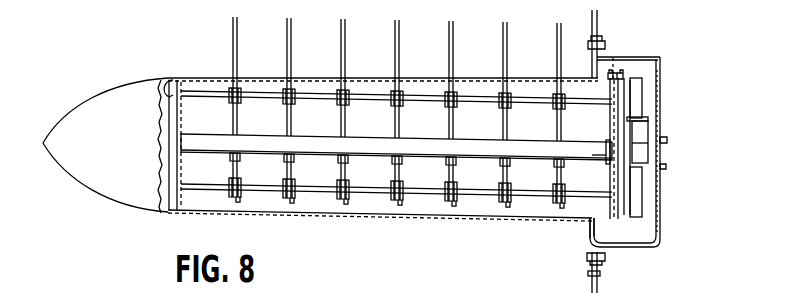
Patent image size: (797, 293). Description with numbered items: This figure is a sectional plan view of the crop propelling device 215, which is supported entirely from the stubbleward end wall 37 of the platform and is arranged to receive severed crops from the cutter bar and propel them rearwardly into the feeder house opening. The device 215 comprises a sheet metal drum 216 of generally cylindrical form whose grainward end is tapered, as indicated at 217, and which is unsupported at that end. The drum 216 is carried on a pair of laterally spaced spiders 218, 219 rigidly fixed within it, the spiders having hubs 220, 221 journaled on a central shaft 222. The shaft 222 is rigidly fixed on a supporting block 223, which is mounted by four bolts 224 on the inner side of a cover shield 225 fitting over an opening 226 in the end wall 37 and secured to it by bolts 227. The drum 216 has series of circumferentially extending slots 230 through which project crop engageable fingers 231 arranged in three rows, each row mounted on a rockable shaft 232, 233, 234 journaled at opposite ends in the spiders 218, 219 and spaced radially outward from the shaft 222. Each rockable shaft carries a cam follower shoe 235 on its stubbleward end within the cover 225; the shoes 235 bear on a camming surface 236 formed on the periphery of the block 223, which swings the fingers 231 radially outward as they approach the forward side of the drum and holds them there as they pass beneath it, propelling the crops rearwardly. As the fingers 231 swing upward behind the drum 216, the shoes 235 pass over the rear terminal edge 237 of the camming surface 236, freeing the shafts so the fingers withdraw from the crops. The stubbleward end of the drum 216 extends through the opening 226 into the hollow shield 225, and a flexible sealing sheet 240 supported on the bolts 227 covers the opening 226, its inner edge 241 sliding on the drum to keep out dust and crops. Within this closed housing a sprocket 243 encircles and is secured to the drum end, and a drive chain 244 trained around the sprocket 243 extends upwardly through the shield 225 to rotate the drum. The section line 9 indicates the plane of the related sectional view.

The crop propelling device 215 is at (342, 222).
The sheet metal drum 216 is at (413, 218).
The tapered grainward end 217 is at (117, 149).
The spider 218 is at (170, 79).
The spider 219 is at (610, 120).
The hub 220 is at (189, 135).
The hub 221 is at (607, 152).
The central shaft 222 is at (365, 146).
The supporting block 223 is at (651, 133).
The bolts 224 is at (666, 166).
The cover shield 225 is at (661, 222).
The opening 226 is at (605, 253).
The bolts 227 is at (589, 46).
The slots 230 is at (339, 112).
The crop engageable fingers 231 is at (452, 43).
The rockable shaft 232 is at (248, 90).
The rockable shaft 233 is at (258, 188).
The rockable shaft 234 is at (313, 160).
The cam follower shoe 235 is at (639, 87).
The camming surface 236 is at (668, 139).
The rear terminal edge 237 is at (645, 117).
The sealing sheet 240 is at (593, 74).
The inner edge 241 is at (587, 256).
The sprocket 243 is at (614, 73).
The drive chain 244 is at (624, 72).
The stubbleward end wall 37 is at (588, 285).
The section line 9 is at (658, 57).